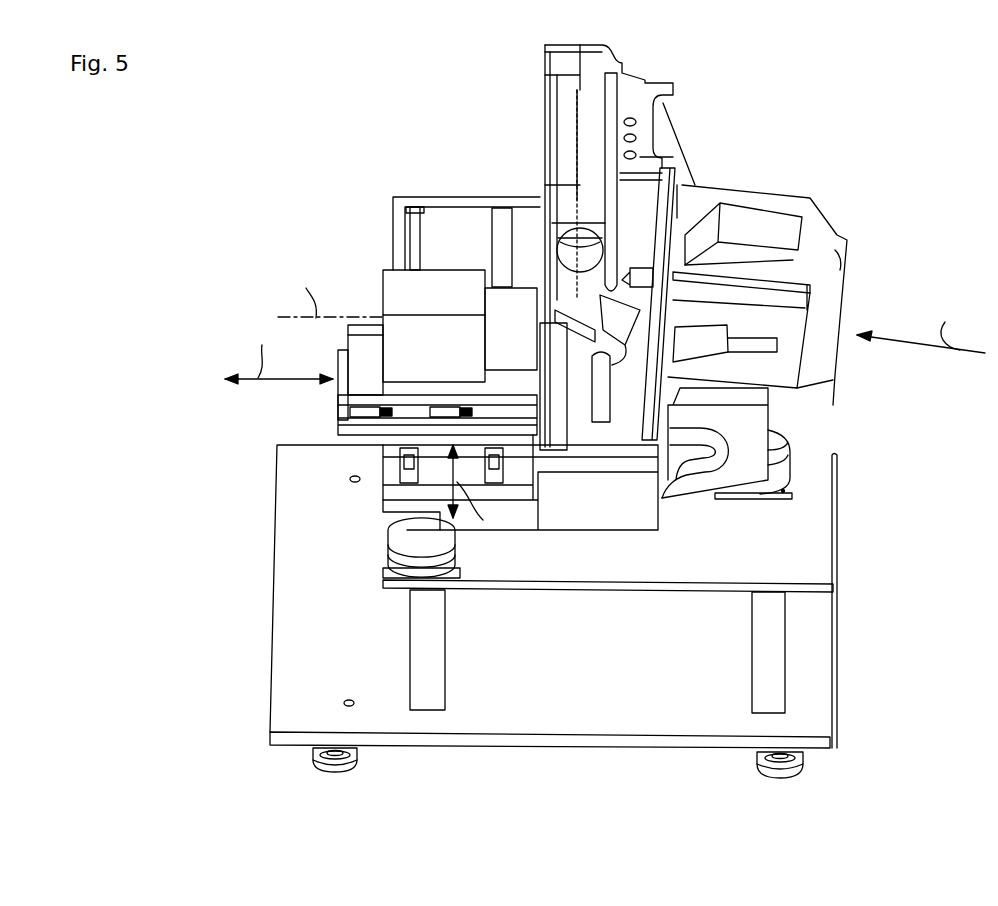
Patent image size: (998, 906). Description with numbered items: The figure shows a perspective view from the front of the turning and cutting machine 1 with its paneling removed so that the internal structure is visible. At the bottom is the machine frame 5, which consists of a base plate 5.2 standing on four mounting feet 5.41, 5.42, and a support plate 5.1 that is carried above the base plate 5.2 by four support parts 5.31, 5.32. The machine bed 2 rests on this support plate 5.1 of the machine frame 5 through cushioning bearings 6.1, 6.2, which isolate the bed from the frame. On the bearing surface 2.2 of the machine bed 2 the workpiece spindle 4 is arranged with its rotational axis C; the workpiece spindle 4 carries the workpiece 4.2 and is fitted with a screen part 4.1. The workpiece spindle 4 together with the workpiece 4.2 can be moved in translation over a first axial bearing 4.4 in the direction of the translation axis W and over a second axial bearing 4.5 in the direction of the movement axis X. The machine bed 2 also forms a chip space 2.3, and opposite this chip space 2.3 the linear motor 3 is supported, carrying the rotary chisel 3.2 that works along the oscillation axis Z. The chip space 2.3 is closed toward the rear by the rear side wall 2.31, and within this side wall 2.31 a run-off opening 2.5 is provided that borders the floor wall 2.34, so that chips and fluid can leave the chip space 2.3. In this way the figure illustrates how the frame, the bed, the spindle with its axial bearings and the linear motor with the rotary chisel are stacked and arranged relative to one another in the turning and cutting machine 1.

The turning and cutting machine 1 is at (183, 202).
The machine bed 2 is at (590, 516).
The bearing surface 2.2 is at (412, 213).
The chip space 2.3 is at (592, 118).
The rear side wall 2.31 is at (617, 187).
The floor wall 2.34 is at (578, 290).
The run-off opening 2.5 is at (490, 215).
The linear motor 3 is at (837, 260).
The rotary chisel 3.2 is at (640, 230).
The workpiece spindle 4 is at (436, 366).
The screen part 4.1 is at (597, 383).
The workpiece 4.2 is at (543, 323).
The first axial bearing 4.4 is at (333, 412).
The second axial bearing 4.5 is at (390, 195).
The machine frame 5 is at (215, 598).
The support plate 5.1 is at (812, 562).
The base plate 5.2 is at (815, 668).
The support part 5.31 is at (433, 650).
The support part 5.32 is at (763, 648).
The mounting foot 5.41 is at (352, 765).
The mounting foot 5.42 is at (800, 768).
The cushioning bearing 6.1 is at (775, 447).
The cushioning bearing 6.2 is at (390, 530).